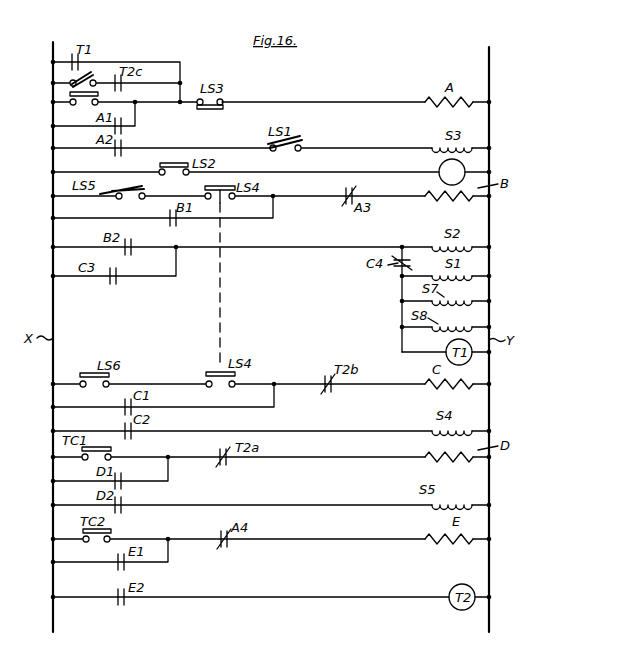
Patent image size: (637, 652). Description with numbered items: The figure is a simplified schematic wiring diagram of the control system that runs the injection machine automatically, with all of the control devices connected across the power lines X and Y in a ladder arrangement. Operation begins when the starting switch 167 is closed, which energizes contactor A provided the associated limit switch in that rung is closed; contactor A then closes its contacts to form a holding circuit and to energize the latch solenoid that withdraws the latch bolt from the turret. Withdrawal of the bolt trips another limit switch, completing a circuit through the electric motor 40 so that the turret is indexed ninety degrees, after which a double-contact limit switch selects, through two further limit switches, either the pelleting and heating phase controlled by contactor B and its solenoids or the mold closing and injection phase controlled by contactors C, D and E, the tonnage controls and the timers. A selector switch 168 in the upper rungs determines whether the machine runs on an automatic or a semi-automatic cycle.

The selector switch 168 is at (72, 82).
The starting switch 167 is at (70, 95).
The electric motor 40 is at (470, 162).